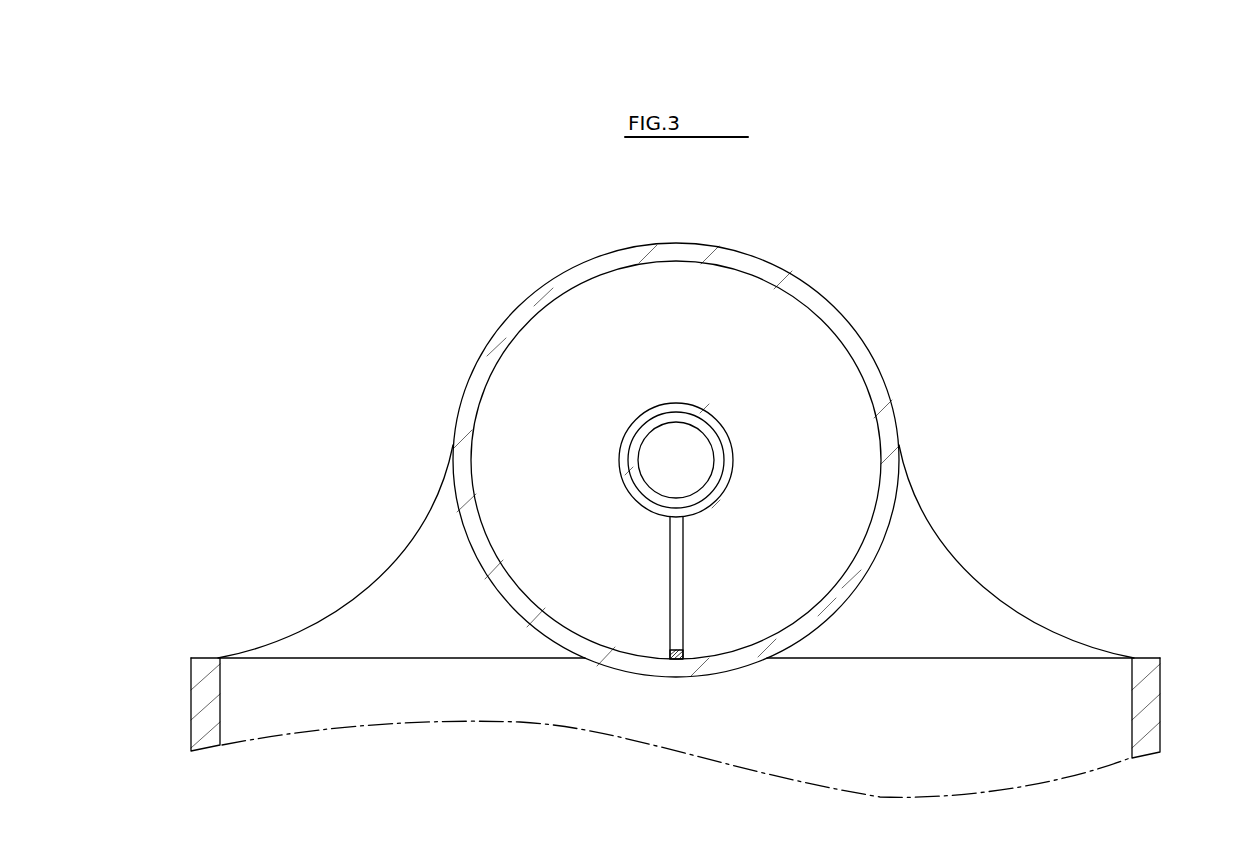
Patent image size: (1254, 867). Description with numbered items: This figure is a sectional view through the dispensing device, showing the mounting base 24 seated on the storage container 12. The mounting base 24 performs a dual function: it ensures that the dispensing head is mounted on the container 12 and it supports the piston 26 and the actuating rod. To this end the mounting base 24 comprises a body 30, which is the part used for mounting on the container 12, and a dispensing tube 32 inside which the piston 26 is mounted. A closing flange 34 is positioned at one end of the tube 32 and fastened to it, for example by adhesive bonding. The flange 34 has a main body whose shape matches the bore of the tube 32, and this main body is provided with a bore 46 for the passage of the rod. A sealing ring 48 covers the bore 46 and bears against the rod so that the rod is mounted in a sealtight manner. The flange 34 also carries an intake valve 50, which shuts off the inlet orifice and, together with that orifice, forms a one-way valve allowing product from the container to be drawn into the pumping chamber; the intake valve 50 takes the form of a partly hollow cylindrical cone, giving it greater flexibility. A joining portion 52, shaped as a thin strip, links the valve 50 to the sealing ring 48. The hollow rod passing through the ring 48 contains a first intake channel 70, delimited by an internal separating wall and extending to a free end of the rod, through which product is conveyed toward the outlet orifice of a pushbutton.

The container 12 is at (1144, 703).
The mounting base 24 is at (641, 447).
The piston 26 is at (706, 497).
The body 30 is at (992, 590).
The dispensing tube 32 is at (598, 268).
The closing flange 34 is at (818, 378).
The bore 46 is at (537, 353).
The sealing ring 48 is at (679, 454).
The intake valve 50 is at (669, 652).
The joining portion 52 is at (669, 572).
The first intake channel 70 is at (713, 472).